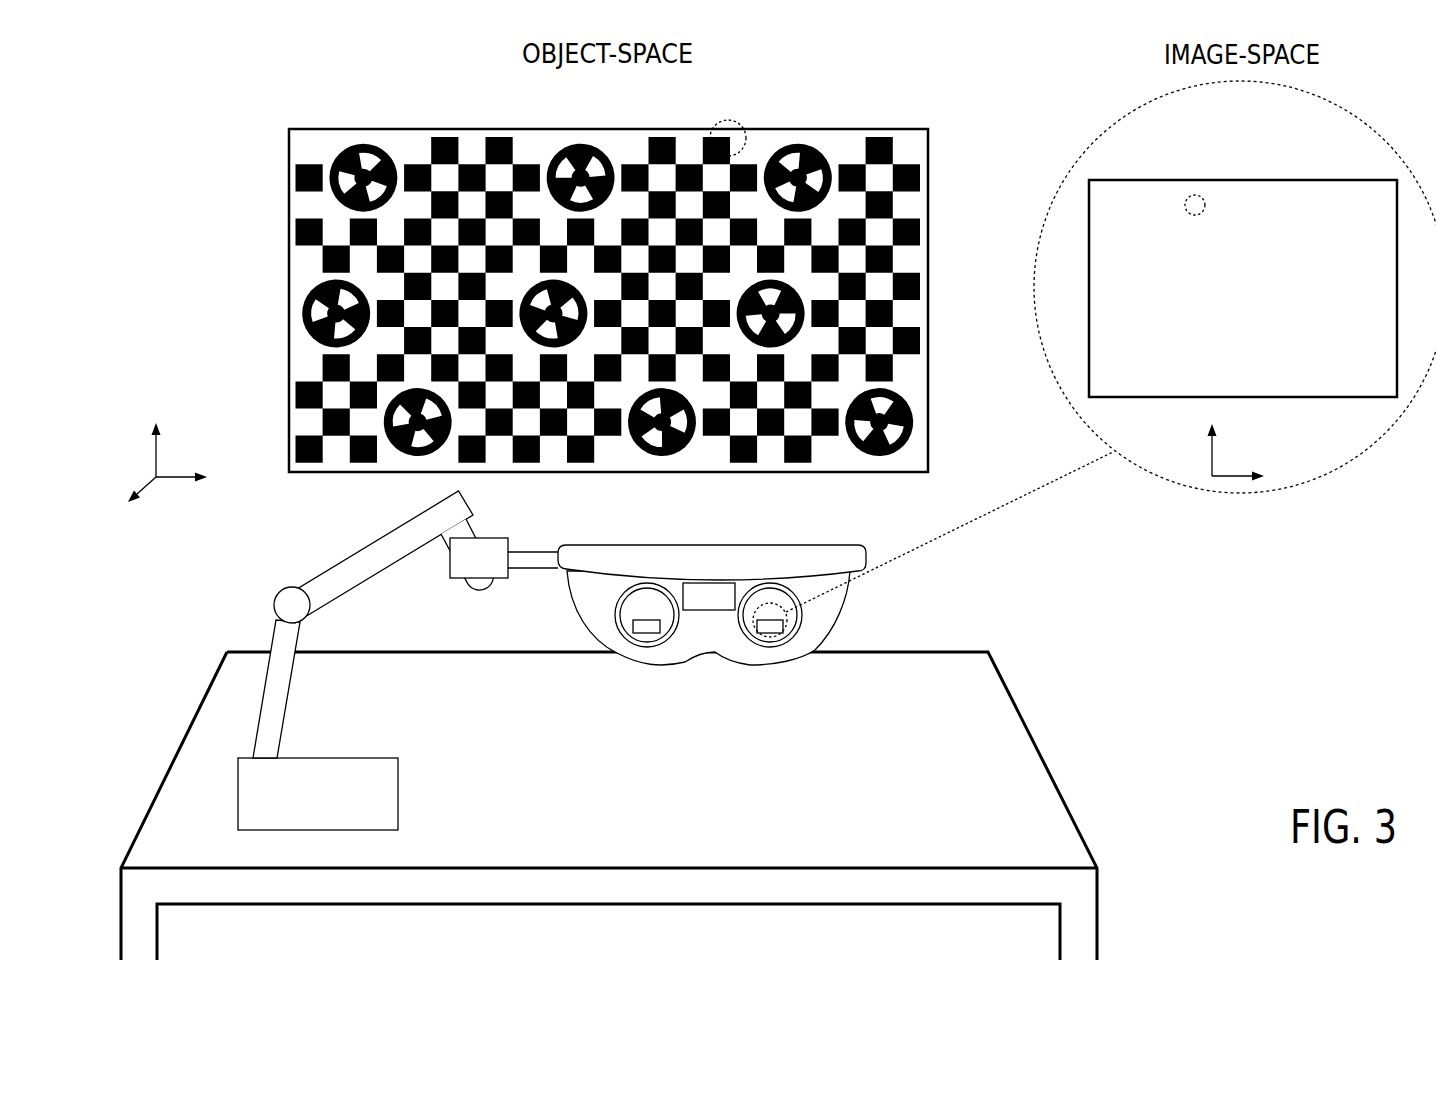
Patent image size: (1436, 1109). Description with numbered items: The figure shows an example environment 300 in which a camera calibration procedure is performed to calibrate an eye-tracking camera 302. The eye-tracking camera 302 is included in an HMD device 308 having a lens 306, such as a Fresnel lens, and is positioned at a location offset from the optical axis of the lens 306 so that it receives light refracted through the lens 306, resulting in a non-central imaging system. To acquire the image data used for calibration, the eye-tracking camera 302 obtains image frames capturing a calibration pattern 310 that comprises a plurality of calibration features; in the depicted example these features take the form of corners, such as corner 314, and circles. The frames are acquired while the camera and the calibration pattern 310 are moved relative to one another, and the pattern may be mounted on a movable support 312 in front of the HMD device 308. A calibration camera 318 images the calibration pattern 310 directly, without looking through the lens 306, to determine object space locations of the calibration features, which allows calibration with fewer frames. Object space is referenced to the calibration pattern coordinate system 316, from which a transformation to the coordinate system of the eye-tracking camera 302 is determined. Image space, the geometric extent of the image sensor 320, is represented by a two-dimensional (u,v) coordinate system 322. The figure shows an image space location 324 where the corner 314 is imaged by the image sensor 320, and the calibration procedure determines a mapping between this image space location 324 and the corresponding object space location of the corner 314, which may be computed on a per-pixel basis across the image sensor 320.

The environment 300 is at (1137, 705).
The eye-tracking camera 302 is at (771, 640).
The lens 306 is at (799, 612).
The HMD device 308 is at (723, 639).
The calibration pattern 310 is at (288, 298).
The robotic arm 312 is at (372, 533).
The corner 314 is at (728, 120).
The coordinate system 316 is at (166, 500).
The calibration camera 318 is at (709, 596).
The image sensor 320 is at (1243, 288).
The coordinate system 322 is at (1283, 465).
The image space location 324 is at (1205, 203).